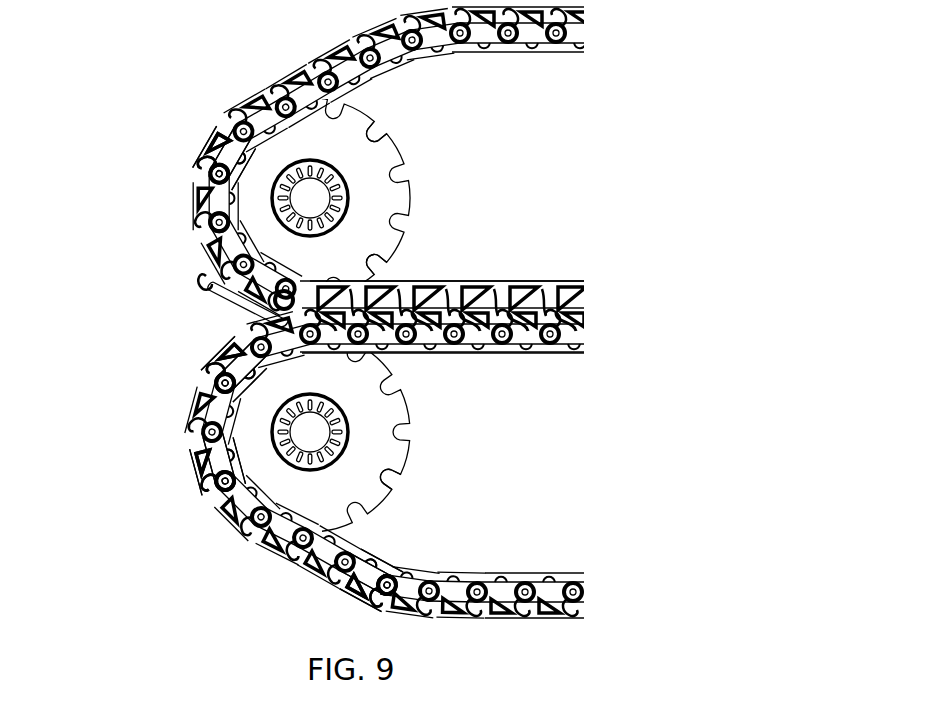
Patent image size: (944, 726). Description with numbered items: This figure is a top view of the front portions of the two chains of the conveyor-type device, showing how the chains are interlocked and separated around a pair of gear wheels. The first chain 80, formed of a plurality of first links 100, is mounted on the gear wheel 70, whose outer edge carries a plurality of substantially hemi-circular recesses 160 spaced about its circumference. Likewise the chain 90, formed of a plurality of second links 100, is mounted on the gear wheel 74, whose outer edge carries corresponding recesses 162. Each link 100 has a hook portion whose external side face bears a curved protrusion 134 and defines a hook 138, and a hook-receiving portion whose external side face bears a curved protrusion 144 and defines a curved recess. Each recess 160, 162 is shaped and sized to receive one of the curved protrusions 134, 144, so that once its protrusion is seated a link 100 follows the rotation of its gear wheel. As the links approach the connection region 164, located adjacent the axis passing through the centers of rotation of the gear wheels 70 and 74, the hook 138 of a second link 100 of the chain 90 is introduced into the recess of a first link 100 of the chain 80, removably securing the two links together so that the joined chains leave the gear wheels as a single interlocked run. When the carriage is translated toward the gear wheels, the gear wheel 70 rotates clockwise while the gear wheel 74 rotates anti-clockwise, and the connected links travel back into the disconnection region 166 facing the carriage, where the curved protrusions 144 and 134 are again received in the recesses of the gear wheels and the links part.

The gear wheel 70 is at (398, 210).
The gear wheel 74 is at (397, 455).
The first chain 80 is at (199, 81).
The first chain 90 is at (216, 525).
The link 100 is at (200, 153).
The curved protrusion 134 is at (392, 578).
The hook 138 is at (200, 450).
The curved protrusion 144 is at (215, 260).
The recess 160 is at (393, 125).
The recess 162 is at (413, 484).
The connection region 164 is at (229, 304).
The disconnection region 166 is at (406, 267).